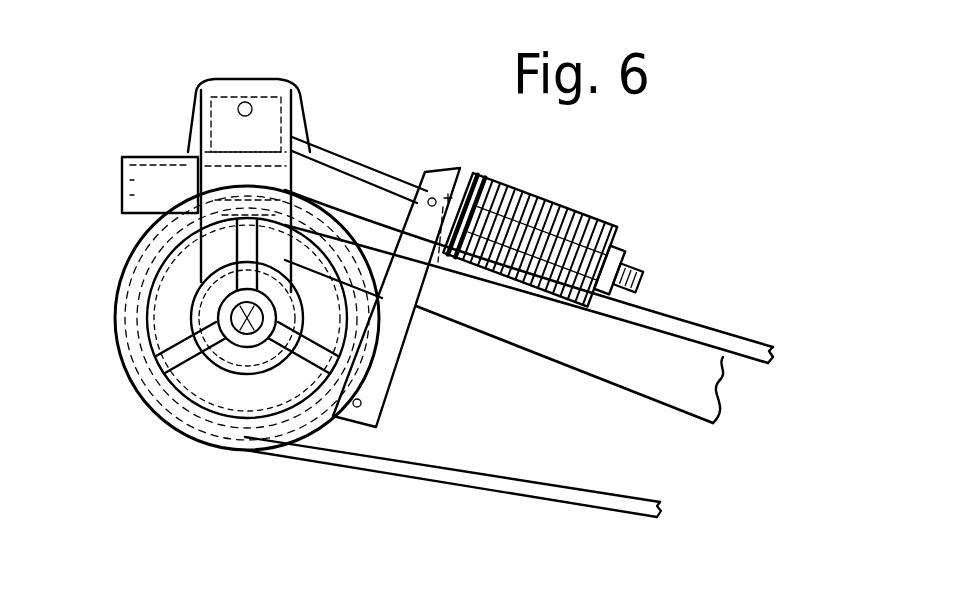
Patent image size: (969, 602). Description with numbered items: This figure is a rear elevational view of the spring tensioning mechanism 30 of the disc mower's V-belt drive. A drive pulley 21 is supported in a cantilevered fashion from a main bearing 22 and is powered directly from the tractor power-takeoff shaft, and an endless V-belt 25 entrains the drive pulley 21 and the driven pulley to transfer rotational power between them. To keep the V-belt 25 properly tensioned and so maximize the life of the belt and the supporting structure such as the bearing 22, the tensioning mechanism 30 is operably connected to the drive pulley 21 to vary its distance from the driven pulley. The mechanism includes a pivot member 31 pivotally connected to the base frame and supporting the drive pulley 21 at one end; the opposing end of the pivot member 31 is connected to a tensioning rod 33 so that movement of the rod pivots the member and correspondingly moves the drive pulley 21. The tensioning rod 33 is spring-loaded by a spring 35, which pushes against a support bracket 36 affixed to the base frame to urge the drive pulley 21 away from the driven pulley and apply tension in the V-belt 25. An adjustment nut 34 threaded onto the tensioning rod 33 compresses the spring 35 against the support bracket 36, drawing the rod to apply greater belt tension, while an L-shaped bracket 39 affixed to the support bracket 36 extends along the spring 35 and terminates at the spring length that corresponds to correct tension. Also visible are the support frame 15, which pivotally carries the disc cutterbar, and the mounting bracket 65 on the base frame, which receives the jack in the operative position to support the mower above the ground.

The support frame 15 is at (568, 346).
The drive pulley 21 is at (241, 444).
The main bearing 22 is at (238, 372).
The V-belt 25 is at (537, 486).
The spring tensioning mechanism 30 is at (572, 190).
The pivot member 31 is at (222, 80).
The tensioning rod 33 is at (322, 138).
The adjustment nut 34 is at (622, 248).
The spring 35 is at (646, 273).
The support bracket 36 is at (443, 168).
The L-shaped bracket 39 is at (585, 206).
The mounting bracket 65 is at (148, 157).